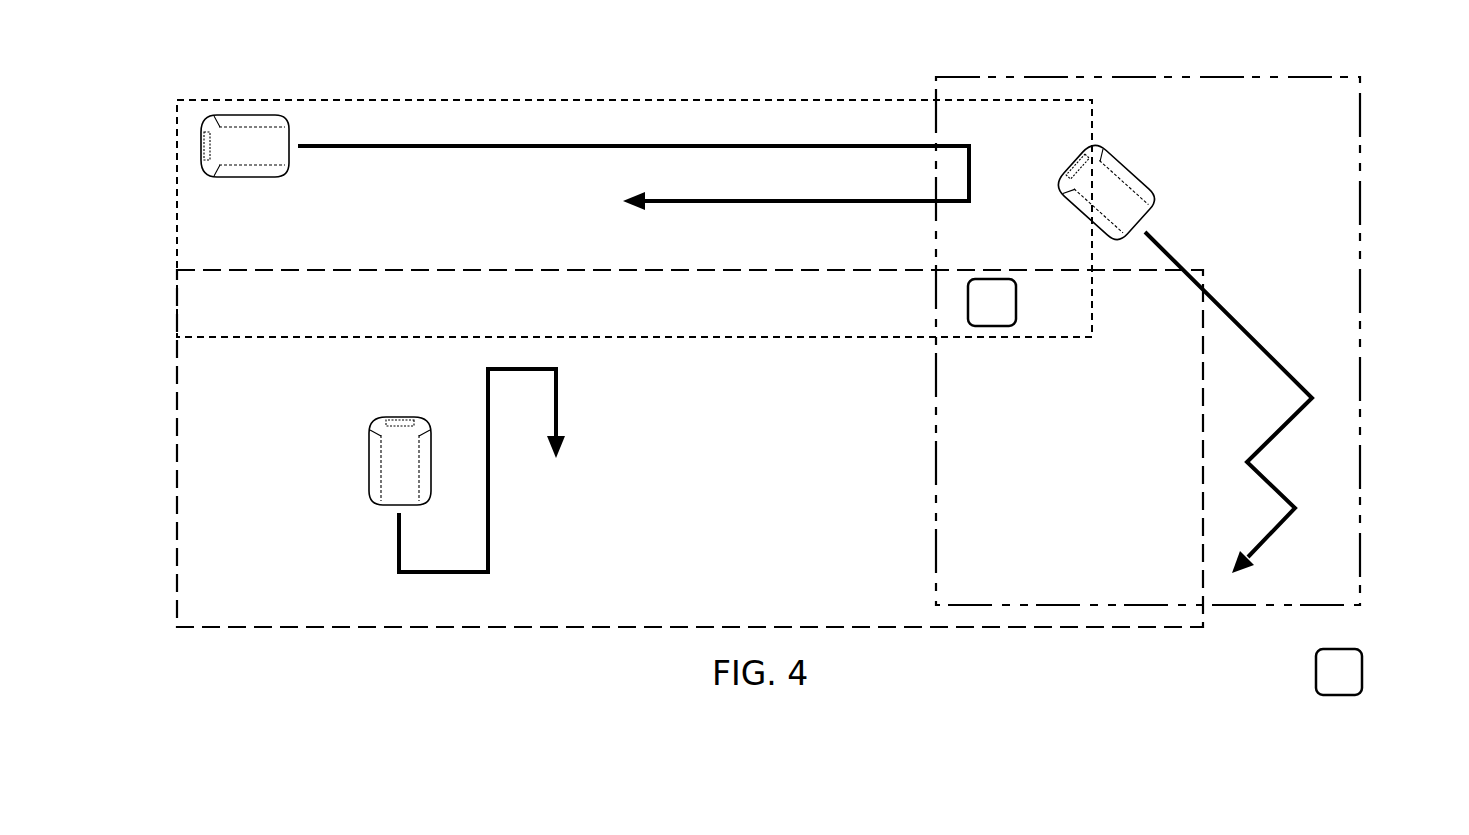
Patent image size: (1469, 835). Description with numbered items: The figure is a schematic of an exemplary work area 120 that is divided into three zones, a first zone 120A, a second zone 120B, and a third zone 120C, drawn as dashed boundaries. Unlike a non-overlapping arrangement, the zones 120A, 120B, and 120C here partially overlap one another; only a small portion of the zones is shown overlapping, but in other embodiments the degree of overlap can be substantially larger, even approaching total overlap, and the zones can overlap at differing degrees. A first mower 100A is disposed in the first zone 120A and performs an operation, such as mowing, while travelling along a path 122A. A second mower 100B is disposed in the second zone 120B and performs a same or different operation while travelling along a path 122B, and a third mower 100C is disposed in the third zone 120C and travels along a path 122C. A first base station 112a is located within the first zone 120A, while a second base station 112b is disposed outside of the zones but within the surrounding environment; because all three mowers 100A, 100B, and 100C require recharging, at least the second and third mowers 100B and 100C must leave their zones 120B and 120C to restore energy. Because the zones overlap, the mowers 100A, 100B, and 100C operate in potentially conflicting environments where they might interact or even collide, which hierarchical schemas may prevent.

The work area 120 is at (763, 118).
The first zone 120A is at (551, 92).
The second zone 120B is at (168, 487).
The third zone 120C is at (1149, 68).
The first mower 100A is at (241, 186).
The second mower 100B is at (359, 462).
The third mower 100C is at (1163, 146).
The path 122A is at (466, 149).
The path 122B is at (490, 516).
The path 122C is at (1293, 343).
The first base station 112a is at (990, 328).
The second base station 112b is at (1362, 672).